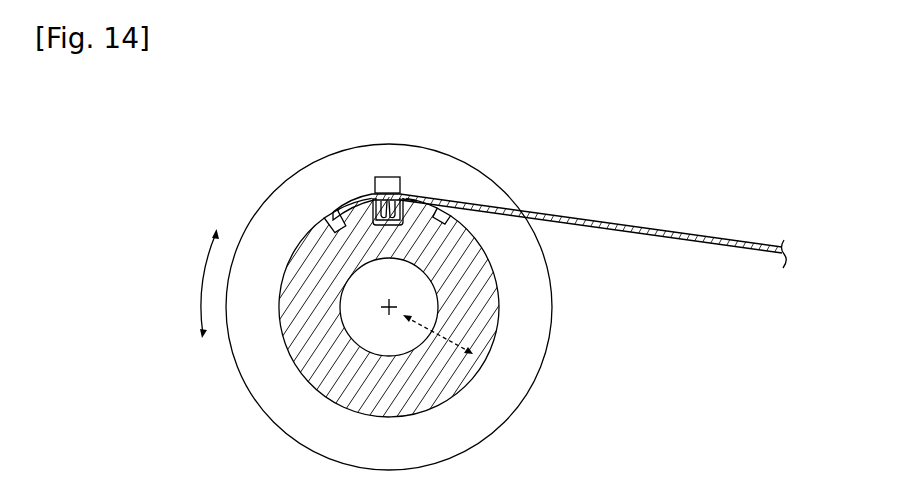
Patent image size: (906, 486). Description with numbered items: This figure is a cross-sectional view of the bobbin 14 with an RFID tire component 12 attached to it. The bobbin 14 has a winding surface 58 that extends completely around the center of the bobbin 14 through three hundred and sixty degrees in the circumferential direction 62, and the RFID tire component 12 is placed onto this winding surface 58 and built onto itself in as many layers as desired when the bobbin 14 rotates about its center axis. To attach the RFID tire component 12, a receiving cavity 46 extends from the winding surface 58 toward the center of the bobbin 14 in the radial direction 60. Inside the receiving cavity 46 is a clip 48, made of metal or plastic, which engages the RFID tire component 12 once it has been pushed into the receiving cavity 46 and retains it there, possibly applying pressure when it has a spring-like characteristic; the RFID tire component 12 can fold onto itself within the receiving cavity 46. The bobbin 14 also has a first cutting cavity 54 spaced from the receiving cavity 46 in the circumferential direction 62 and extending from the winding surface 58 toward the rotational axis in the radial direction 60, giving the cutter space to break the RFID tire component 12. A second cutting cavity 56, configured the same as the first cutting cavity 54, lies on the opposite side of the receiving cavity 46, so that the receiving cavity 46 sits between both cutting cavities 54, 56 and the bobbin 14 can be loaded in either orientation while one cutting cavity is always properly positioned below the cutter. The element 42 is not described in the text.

The RFID tire component 12 is at (612, 222).
The bobbin 14 is at (271, 130).
The clip block 42 is at (398, 177).
The receiving cavity 46 is at (418, 210).
The clip 48 is at (374, 177).
The first cutting cavity 54 is at (333, 210).
The second cutting cavity 56 is at (458, 218).
The winding surface 58 is at (420, 418).
The radial direction 60 is at (464, 320).
The circumferential direction 62 is at (203, 272).